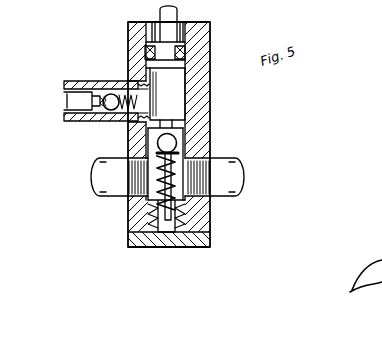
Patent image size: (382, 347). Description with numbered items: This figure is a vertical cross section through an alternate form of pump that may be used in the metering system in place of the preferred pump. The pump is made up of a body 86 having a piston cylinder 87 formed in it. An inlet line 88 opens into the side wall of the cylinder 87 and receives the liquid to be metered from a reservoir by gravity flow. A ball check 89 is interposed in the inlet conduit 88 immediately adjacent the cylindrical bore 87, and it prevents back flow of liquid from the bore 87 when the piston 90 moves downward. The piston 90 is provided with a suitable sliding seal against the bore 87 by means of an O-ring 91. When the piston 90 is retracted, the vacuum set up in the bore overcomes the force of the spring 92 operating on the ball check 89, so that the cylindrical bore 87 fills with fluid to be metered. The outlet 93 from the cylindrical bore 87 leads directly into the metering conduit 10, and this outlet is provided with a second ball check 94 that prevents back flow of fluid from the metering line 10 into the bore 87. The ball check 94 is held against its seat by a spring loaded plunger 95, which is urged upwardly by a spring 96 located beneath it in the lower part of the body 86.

The metering conduit 10 is at (100, 178).
The body 86 is at (196, 108).
The piston cylinder 87 is at (186, 86).
The inlet line 88 is at (110, 80).
The ball check 89 is at (108, 120).
The piston 90 is at (152, 47).
The O-ring 91 is at (152, 60).
The spring 92 is at (122, 120).
The outlet 93 is at (188, 125).
The ball check 94 is at (177, 138).
The spring loaded plunger 95 is at (180, 215).
The spring 96 is at (158, 248).